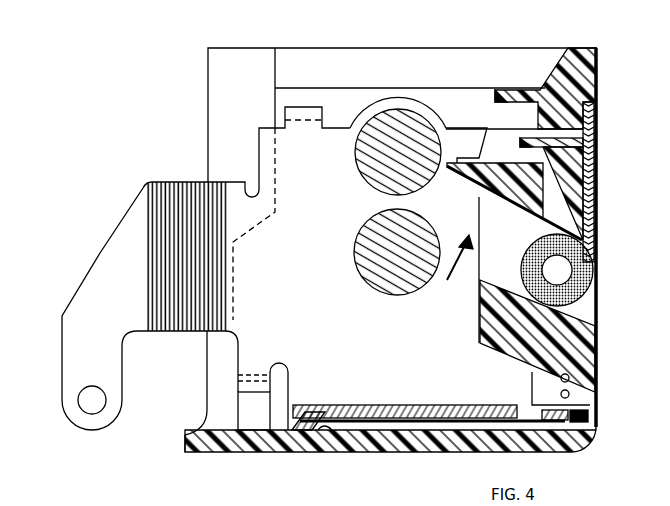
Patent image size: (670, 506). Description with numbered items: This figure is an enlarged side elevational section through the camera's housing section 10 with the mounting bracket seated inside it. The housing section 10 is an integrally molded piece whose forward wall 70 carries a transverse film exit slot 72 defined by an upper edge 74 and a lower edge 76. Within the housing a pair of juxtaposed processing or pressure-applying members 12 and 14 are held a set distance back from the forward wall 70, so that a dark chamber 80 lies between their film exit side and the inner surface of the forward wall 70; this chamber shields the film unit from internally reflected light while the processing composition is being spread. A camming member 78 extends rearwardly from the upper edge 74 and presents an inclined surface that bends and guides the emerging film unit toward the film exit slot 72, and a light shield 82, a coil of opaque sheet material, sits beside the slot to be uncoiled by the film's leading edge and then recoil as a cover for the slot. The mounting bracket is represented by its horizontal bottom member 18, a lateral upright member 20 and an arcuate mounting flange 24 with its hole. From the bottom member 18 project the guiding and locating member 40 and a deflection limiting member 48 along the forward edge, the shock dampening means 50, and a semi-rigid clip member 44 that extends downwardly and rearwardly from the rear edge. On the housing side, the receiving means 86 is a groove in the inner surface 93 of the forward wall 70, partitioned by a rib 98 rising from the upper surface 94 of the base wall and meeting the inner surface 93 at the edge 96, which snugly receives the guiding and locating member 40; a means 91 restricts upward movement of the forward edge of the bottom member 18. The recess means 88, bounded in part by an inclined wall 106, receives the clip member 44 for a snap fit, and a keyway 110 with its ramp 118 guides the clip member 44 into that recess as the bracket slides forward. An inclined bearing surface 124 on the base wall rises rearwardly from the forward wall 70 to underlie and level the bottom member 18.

The housing section 10 is at (252, 65).
The processing or pressure-applying member 12 is at (353, 153).
The processing or pressure-applying member 14 is at (357, 272).
The bottom member 18 is at (428, 405).
The lateral upright member 20 is at (410, 347).
The arcuate mounting flange 24 is at (72, 340).
The guiding and locating member 40 is at (585, 440).
The semi-rigid clip member 44 is at (298, 414).
The deflection limiting member 48 is at (548, 398).
The shock dampening means 50 is at (528, 408).
The forward wall 70 is at (597, 78).
The film exit slot 72 is at (598, 300).
The upper edge 74 is at (597, 250).
The lower edge 76 is at (588, 325).
The camming member 78 is at (507, 203).
The dark chamber 80 is at (449, 277).
The light shield 82 is at (522, 257).
The receiving means 86 is at (588, 416).
The recess means 88 is at (326, 433).
The means for restricting upward movement 91 is at (528, 373).
The inner surface 93 is at (569, 378).
The upper surface 94 is at (395, 418).
The edge 96 is at (569, 394).
The rib 98 is at (597, 427).
The inclined wall 106 is at (325, 440).
The keyway 110 is at (255, 430).
The ramp 118 is at (282, 440).
The inclined bearing surface 124 is at (383, 438).